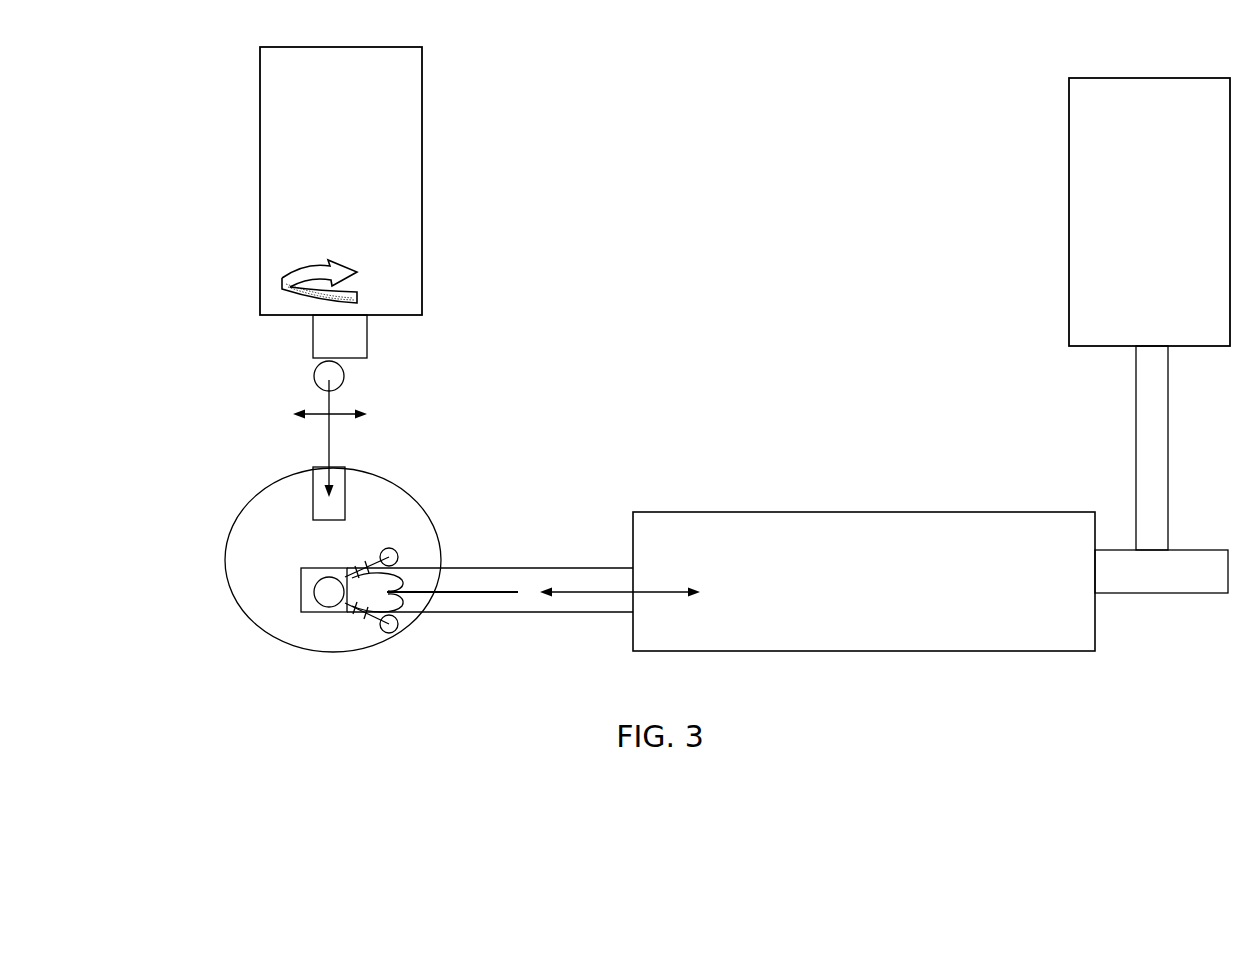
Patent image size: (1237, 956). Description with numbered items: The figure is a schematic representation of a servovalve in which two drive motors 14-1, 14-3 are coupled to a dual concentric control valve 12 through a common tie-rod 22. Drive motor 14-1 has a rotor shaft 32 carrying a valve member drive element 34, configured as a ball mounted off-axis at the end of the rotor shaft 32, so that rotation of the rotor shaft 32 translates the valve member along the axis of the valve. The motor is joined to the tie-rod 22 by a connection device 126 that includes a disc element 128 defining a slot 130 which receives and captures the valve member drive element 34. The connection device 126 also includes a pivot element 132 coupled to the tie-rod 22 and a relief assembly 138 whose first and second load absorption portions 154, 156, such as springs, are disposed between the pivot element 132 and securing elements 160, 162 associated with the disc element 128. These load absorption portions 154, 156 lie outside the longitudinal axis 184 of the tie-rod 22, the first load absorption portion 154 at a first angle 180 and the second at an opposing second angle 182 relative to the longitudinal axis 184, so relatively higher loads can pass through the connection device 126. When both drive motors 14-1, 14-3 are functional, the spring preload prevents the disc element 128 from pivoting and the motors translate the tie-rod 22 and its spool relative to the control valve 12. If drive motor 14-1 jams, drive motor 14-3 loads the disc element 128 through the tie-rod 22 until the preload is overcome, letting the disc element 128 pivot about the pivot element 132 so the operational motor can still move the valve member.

The drive motor 14-1 is at (370, 158).
The drive motor 14-3 is at (1100, 177).
The rotor shaft 32 is at (367, 343).
The valve member drive element 34 is at (345, 377).
The slot 130 is at (355, 458).
The disc element 128 is at (416, 475).
The pivot element 132 is at (329, 592).
The relief assembly 138 is at (278, 588).
The first load absorption portion 154 is at (337, 627).
The second load absorption portion 156 is at (359, 548).
The securing element 160 is at (393, 624).
The securing element 162 is at (398, 552).
The first angle 180 is at (417, 570).
The second angle 182 is at (403, 602).
The longitudinal axis 184 is at (477, 590).
The control valve tie-rod 22 is at (532, 568).
The dual concentric control valve 12 is at (802, 512).
The connection device 126 is at (803, 325).